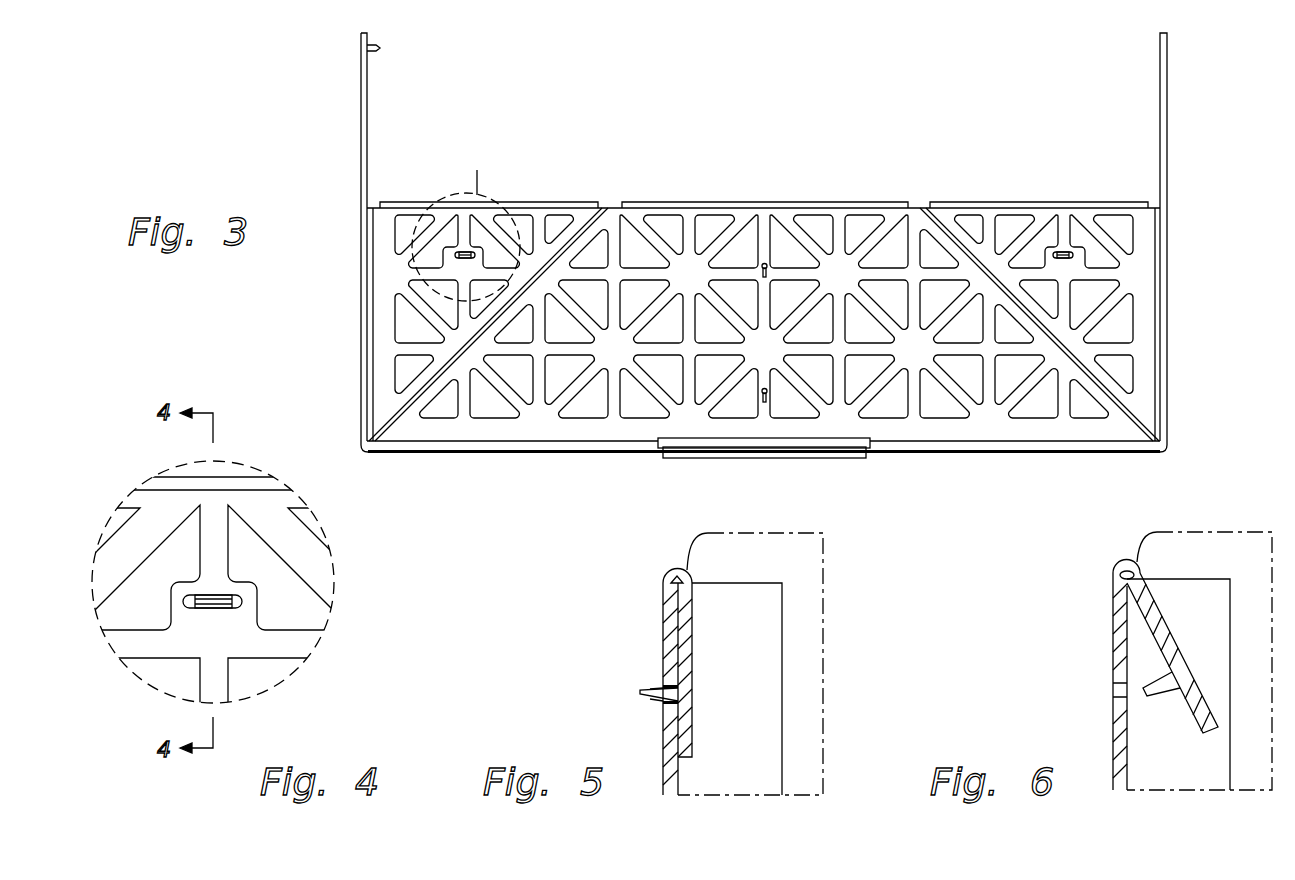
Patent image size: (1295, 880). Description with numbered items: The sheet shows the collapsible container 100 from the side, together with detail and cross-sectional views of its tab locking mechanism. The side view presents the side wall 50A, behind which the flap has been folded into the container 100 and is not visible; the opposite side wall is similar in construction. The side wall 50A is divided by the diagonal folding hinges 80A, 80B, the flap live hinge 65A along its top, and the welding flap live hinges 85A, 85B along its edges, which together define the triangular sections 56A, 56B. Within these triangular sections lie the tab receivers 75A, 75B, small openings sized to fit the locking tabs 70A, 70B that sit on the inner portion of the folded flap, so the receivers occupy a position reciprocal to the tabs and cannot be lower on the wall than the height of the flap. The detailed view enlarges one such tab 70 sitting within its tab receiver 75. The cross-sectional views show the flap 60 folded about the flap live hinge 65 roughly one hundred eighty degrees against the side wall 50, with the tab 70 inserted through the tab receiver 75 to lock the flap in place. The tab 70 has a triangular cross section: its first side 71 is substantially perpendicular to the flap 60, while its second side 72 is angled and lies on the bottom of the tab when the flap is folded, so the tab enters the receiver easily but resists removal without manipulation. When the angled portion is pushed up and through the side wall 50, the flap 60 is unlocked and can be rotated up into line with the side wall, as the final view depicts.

In FIG. 3, the collapsible container 100 is at (274, 74).
In FIG. 3, the side wall 50A is at (862, 223).
In FIG. 3, the triangular section 56A is at (402, 323).
In FIG. 3, the triangular section 56B is at (1125, 323).
In FIG. 3, the flap live hinge 65A is at (670, 203).
In FIG. 3, the locking tab 70A is at (460, 252).
In FIG. 3, the tab receiver 75A is at (483, 253).
In FIG. 3, the locking tab 70B is at (1068, 253).
In FIG. 3, the tab receiver 75B is at (1045, 253).
In FIG. 3, the folding hinge 80A is at (397, 420).
In FIG. 3, the folding hinge 80B is at (1131, 420).
In FIG. 3, the welding flap live hinge 85A is at (372, 392).
In FIG. 3, the welding flap live hinge 85B is at (1158, 392).
In FIG. 4, the tab 70 is at (213, 608).
In FIG. 5, the tab 70 is at (642, 693).
In FIG. 6, the tab 70 is at (1155, 695).
In FIG. 4, the tab receiver 75 is at (242, 602).
In FIG. 5, the tab receiver 75 is at (663, 683).
In FIG. 6, the tab receiver 75 is at (1118, 687).
In FIG. 5, the side wall 50 is at (670, 625).
In FIG. 6, the side wall 50 is at (1118, 624).
In FIG. 5, the flap 60 is at (685, 634).
In FIG. 6, the flap 60 is at (1155, 610).
In FIG. 5, the flap live hinge 65 is at (673, 573).
In FIG. 6, the flap live hinge 65 is at (1125, 570).
In FIG. 5, the first side of the tab 71 is at (650, 687).
In FIG. 5, the second side of the tab 72 is at (663, 705).